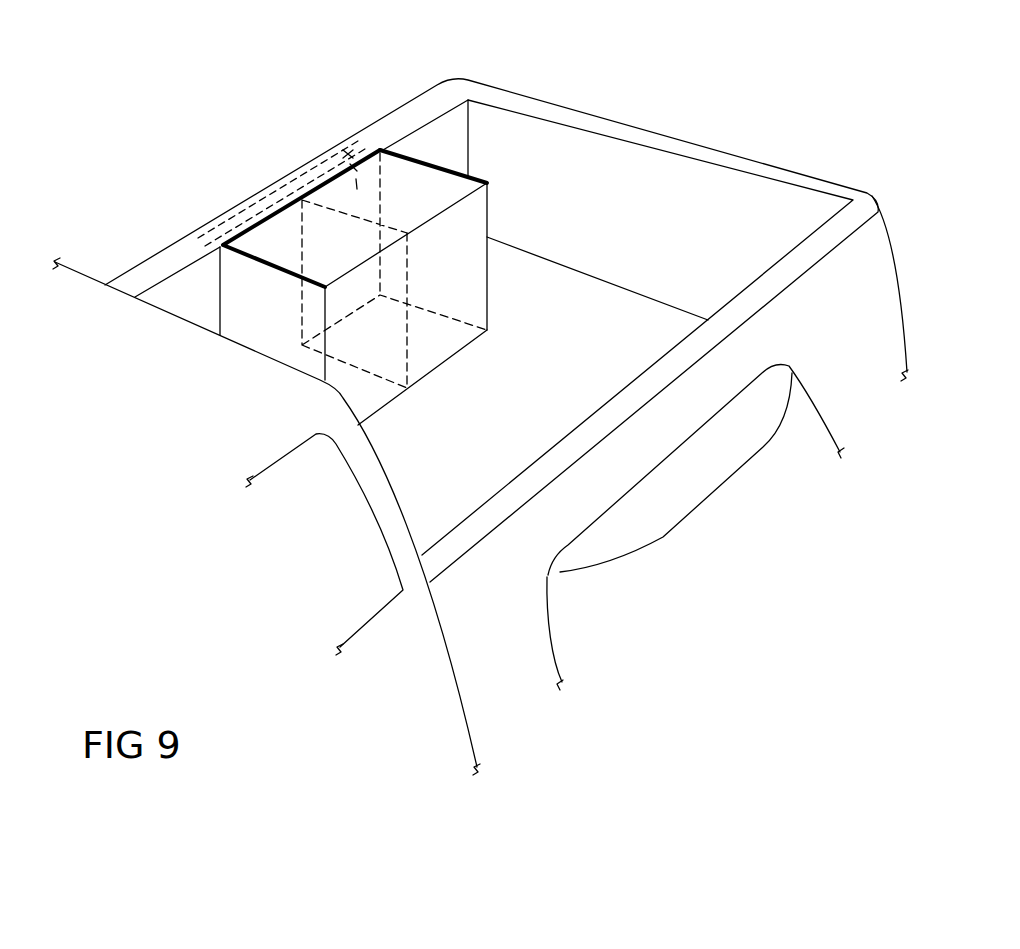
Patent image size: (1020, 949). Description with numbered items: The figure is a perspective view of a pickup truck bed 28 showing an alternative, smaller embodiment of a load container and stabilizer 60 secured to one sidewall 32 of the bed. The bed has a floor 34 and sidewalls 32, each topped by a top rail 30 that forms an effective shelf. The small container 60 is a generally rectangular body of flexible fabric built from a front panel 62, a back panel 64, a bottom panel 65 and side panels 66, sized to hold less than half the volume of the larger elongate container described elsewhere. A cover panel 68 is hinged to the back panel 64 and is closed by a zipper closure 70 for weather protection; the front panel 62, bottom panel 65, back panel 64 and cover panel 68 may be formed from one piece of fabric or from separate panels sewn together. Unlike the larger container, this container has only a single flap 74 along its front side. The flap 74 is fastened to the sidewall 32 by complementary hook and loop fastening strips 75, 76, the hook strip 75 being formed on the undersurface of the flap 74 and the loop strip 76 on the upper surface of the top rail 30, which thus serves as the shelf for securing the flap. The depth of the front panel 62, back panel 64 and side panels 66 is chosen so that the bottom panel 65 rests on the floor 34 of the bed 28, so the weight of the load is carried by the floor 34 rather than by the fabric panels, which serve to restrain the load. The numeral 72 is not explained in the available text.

The pickup truck bed 28 is at (668, 449).
The top rail 30 is at (137, 277).
The sidewall 32 is at (197, 311).
The floor 34 is at (627, 354).
The load container and stabilizer 60 is at (243, 77).
The front panel 62 is at (342, 138).
The back panel 64 is at (473, 310).
The bottom panel 65 is at (383, 347).
The side panels 66 is at (463, 257).
The cover panel 68 is at (347, 251).
The zipper closure 70 is at (253, 222).
The bottom edge 72 is at (407, 368).
The flap 74 is at (372, 148).
The hook fastening strip 75 is at (278, 190).
The loop fastening strip 76 is at (285, 197).